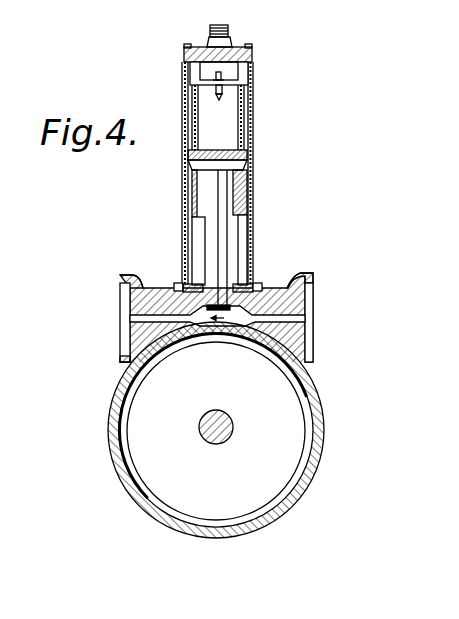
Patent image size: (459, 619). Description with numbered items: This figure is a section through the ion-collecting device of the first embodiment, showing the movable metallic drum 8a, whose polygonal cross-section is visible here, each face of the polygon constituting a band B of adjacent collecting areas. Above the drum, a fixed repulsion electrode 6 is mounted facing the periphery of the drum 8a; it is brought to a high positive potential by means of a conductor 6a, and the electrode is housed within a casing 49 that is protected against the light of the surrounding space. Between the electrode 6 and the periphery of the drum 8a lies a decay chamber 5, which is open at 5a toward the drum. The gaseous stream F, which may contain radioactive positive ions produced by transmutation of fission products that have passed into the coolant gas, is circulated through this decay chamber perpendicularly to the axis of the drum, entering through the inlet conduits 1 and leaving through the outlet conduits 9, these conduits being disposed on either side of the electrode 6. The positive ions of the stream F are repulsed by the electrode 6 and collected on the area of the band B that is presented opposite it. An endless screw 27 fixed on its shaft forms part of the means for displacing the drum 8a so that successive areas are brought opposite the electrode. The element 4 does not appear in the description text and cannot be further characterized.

The casing 49 is at (252, 100).
The conductor 6a is at (215, 238).
The repulsion electrode 6 is at (178, 288).
The endless screw 27 is at (229, 288).
The decay chamber 5 is at (258, 287).
The housing body 4 is at (281, 288).
The inlet conduits 1 is at (306, 307).
The outlet conduits 9 is at (130, 313).
The opening of decay chamber 5a is at (214, 329).
The gaseous stream F is at (222, 318).
The movable metallic drum 8a is at (307, 419).
The band B is at (310, 489).